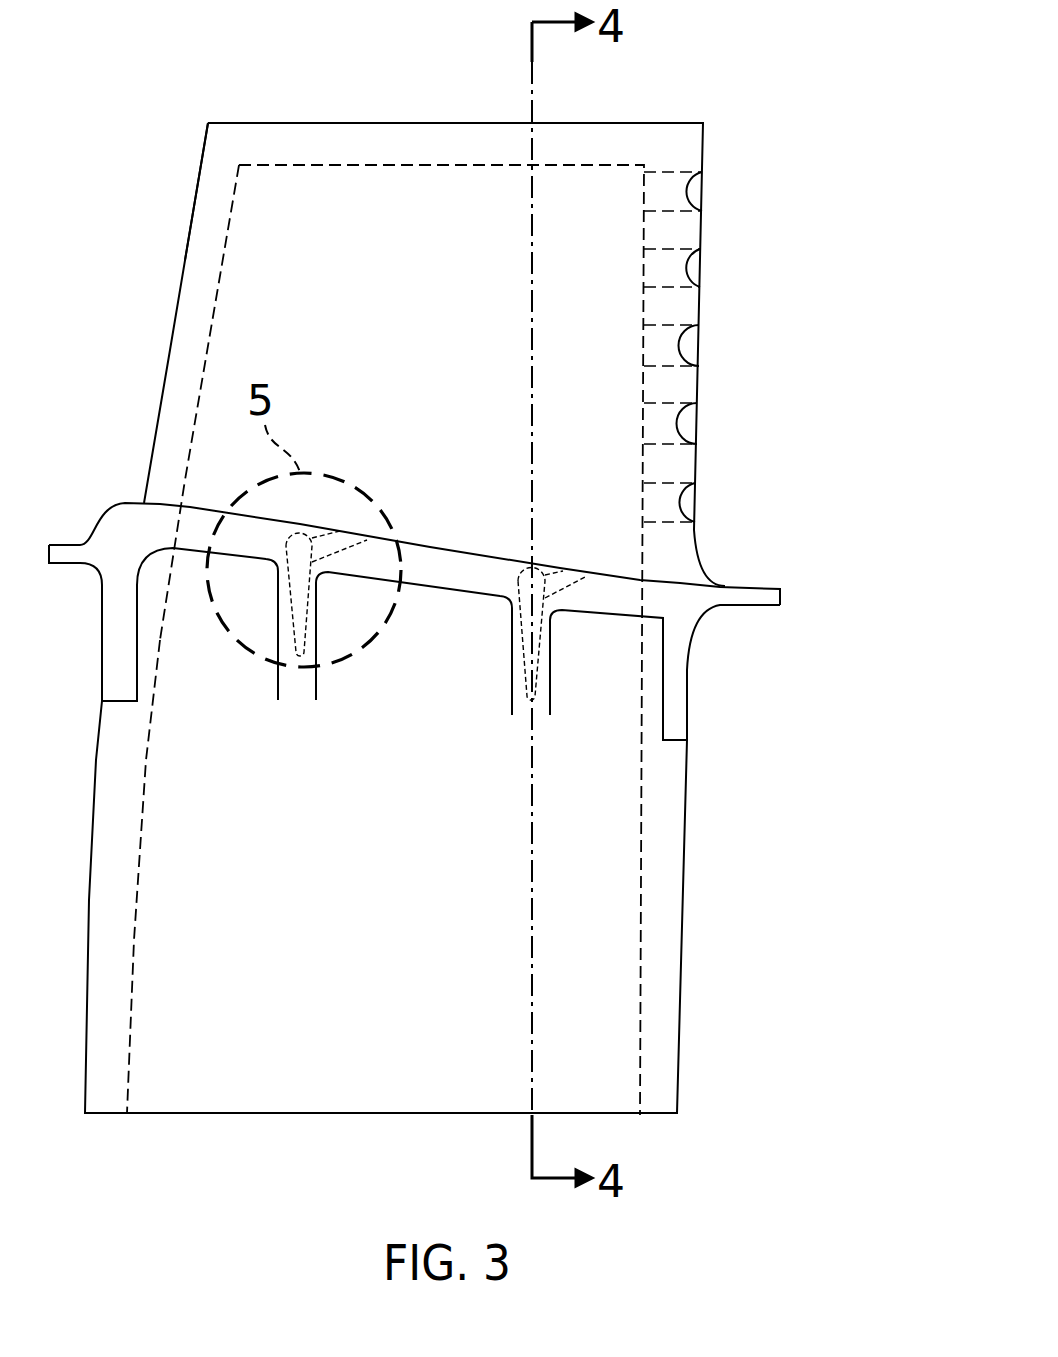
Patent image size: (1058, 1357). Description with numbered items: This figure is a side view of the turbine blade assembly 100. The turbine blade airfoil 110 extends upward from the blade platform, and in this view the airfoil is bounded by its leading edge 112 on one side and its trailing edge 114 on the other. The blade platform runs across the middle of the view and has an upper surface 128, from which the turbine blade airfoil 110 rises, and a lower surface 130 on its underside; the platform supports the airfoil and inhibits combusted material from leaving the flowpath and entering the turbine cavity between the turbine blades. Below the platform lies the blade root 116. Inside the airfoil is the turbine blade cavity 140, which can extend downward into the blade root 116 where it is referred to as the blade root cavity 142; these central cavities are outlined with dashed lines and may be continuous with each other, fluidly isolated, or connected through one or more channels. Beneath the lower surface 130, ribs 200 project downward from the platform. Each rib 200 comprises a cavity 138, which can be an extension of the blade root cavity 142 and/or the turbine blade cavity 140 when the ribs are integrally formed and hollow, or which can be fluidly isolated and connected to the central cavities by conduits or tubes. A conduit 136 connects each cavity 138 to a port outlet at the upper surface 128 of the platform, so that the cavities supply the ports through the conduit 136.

The turbine blade assembly 100 is at (818, 128).
The turbine blade airfoil 110 is at (630, 300).
The leading edge 112 is at (196, 202).
The trailing edge 114 is at (703, 262).
The blade root 116 is at (193, 1047).
The upper surface 128 is at (757, 587).
The lower surface 130 is at (757, 607).
The conduit 136 is at (346, 536).
The cavity 138 is at (302, 650).
The turbine blade cavity 140 is at (250, 285).
The blade root cavity 142 is at (160, 815).
The rib 200 is at (317, 620).